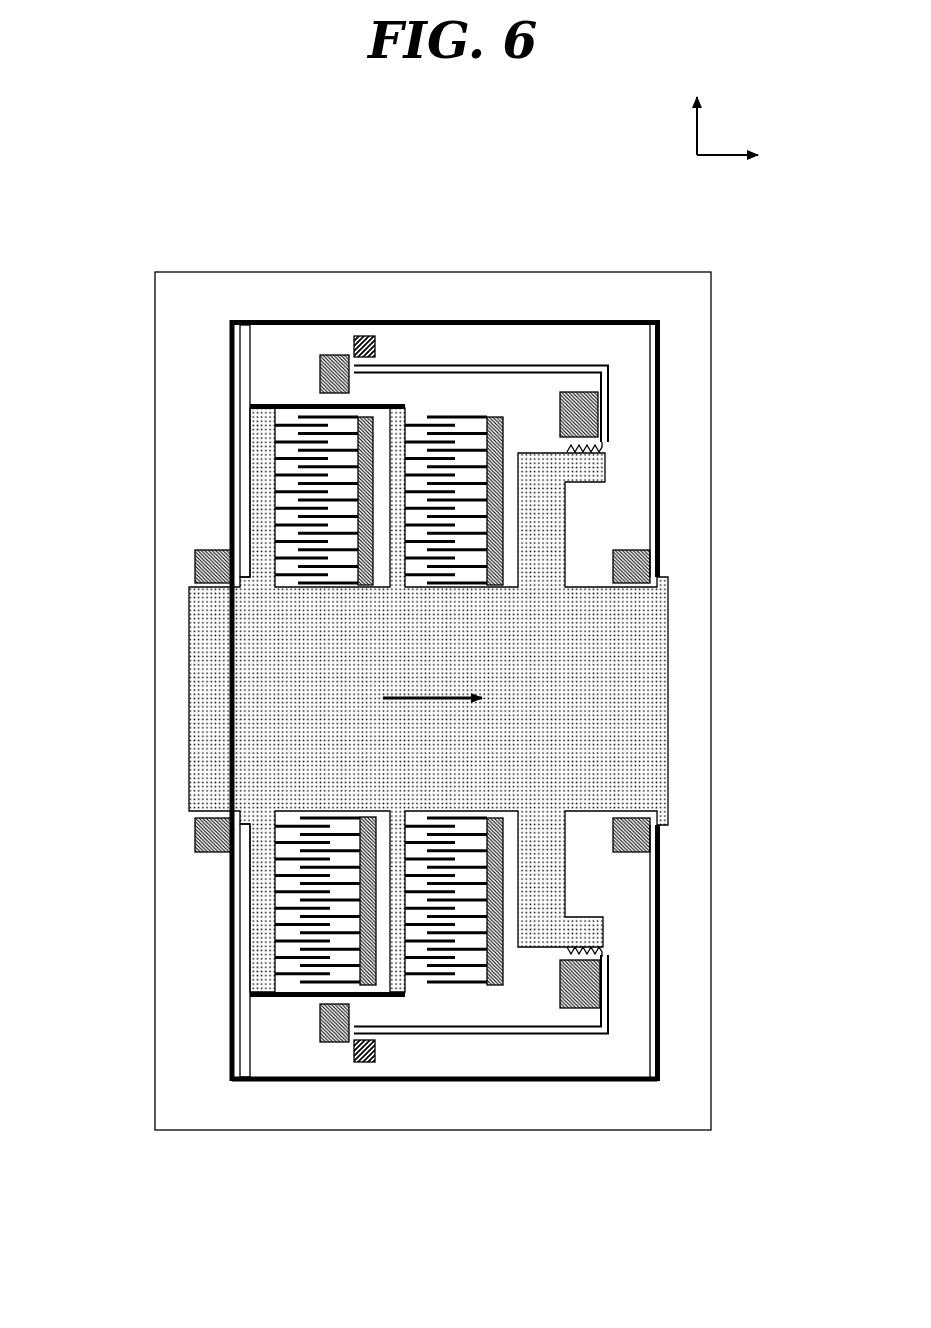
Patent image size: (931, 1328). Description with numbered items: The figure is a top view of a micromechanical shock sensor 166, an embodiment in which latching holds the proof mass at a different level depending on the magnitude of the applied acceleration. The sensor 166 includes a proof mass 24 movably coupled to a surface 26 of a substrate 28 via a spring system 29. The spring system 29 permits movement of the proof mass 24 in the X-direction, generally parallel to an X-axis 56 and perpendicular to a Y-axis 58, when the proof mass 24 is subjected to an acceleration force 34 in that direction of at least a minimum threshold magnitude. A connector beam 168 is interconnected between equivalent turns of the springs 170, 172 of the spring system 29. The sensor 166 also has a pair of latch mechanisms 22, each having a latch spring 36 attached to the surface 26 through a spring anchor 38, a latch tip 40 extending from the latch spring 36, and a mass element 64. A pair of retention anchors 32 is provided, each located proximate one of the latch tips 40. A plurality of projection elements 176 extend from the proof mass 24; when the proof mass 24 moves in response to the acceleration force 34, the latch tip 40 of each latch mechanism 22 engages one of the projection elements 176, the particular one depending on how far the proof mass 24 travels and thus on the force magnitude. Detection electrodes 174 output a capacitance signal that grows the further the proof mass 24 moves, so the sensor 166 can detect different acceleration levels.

The latch mechanism 22 is at (537, 341).
The proof mass 24 is at (217, 707).
The surface 26 is at (182, 1112).
The substrate 28 is at (155, 1102).
The spring system 29 is at (190, 393).
The retention anchor 32 is at (560, 396).
The acceleration force 34 is at (455, 700).
The latch spring 36 is at (428, 364).
The spring anchor 38 is at (327, 375).
The latch tip 40 is at (607, 443).
The X-axis 56 is at (718, 155).
The Y-axis 58 is at (697, 108).
The mass element 64 is at (365, 337).
The micromechanical shock sensor 166 is at (263, 185).
The connector beam 168 is at (322, 320).
The spring 170 is at (230, 437).
The spring 172 is at (658, 463).
The detection electrodes 174 is at (466, 390).
The projection elements 176 is at (618, 460).